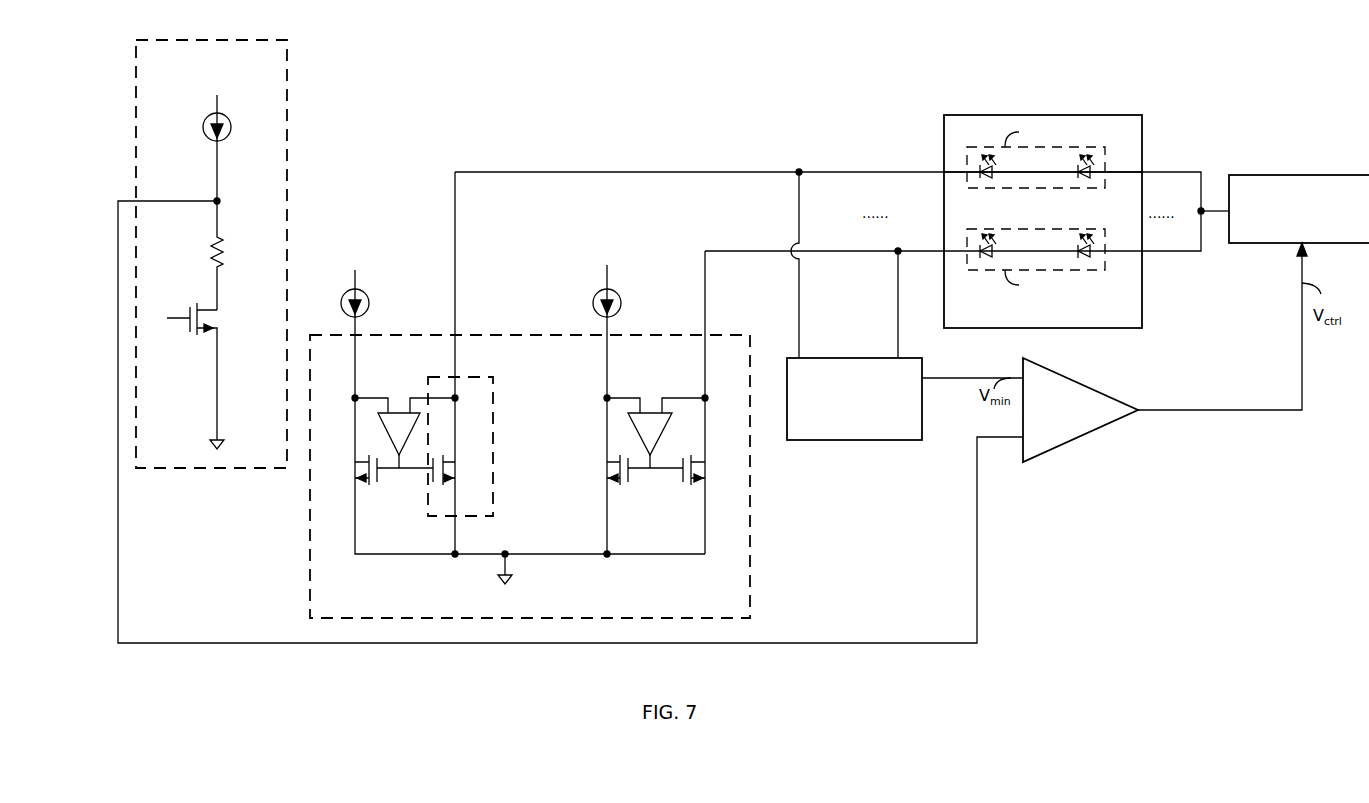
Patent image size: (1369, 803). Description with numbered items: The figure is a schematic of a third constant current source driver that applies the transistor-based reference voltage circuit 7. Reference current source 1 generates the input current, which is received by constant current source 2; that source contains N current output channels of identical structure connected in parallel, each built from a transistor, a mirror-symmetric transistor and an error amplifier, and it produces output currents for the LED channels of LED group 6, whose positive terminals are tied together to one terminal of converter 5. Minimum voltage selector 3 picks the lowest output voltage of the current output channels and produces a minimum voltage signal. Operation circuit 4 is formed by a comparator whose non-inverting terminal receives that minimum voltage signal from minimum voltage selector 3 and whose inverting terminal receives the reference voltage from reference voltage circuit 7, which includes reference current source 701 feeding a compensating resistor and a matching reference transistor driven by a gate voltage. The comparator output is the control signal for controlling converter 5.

The reference voltage circuit 7 is at (198, 254).
The reference current source 701 is at (204, 123).
The reference current source 1 is at (342, 297).
The constant current source 2 is at (530, 395).
The minimum voltage selector 3 is at (854, 399).
The operation circuit 4 is at (1080, 410).
The converter 5 is at (1299, 209).
The LED group 6 is at (1043, 221).